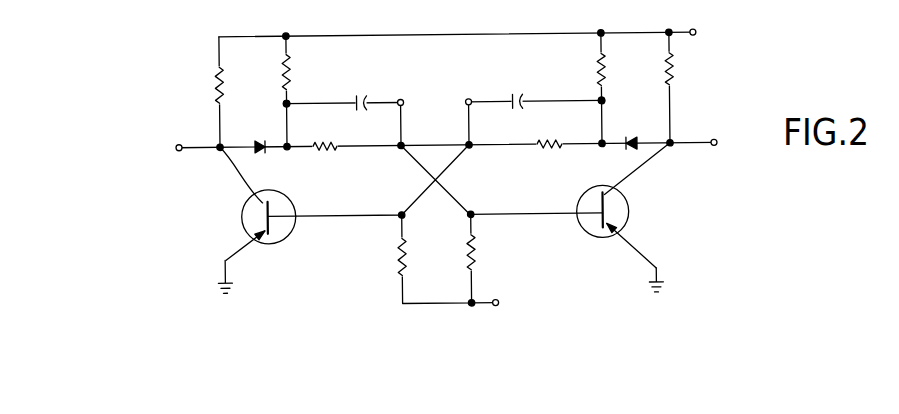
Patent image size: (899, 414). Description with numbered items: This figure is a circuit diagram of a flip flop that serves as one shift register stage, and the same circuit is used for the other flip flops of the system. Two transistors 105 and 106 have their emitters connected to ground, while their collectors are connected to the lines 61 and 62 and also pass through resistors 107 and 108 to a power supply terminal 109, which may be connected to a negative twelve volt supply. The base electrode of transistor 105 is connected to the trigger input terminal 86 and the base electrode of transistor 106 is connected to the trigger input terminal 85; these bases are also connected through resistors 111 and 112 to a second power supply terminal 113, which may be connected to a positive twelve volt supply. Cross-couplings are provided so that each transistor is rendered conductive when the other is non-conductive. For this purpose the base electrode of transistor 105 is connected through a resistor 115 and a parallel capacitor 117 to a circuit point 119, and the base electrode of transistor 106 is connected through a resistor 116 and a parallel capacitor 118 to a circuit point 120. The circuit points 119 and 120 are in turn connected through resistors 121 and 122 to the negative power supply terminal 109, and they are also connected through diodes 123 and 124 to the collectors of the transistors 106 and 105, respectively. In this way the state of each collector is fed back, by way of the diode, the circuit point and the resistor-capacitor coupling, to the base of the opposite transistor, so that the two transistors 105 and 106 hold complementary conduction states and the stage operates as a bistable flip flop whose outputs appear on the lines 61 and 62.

The line 61 is at (195, 145).
The line 62 is at (698, 143).
The trigger input terminal 85 is at (405, 100).
The trigger input terminal 86 is at (472, 100).
The transistor 105 is at (241, 210).
The transistor 106 is at (624, 210).
The resistor 107 is at (217, 85).
The resistor 108 is at (676, 72).
The power supply terminal 109 is at (696, 36).
The resistor 111 is at (396, 246).
The resistor 112 is at (480, 246).
The power supply terminal 113 is at (502, 302).
The resistor 115 is at (535, 150).
The resistor 116 is at (325, 150).
The capacitor 117 is at (521, 95).
The capacitor 118 is at (364, 95).
The circuit point 119 is at (605, 103).
The circuit point 120 is at (286, 100).
The resistor 121 is at (605, 70).
The resistor 122 is at (292, 70).
The diode 123 is at (645, 120).
The diode 124 is at (270, 125).